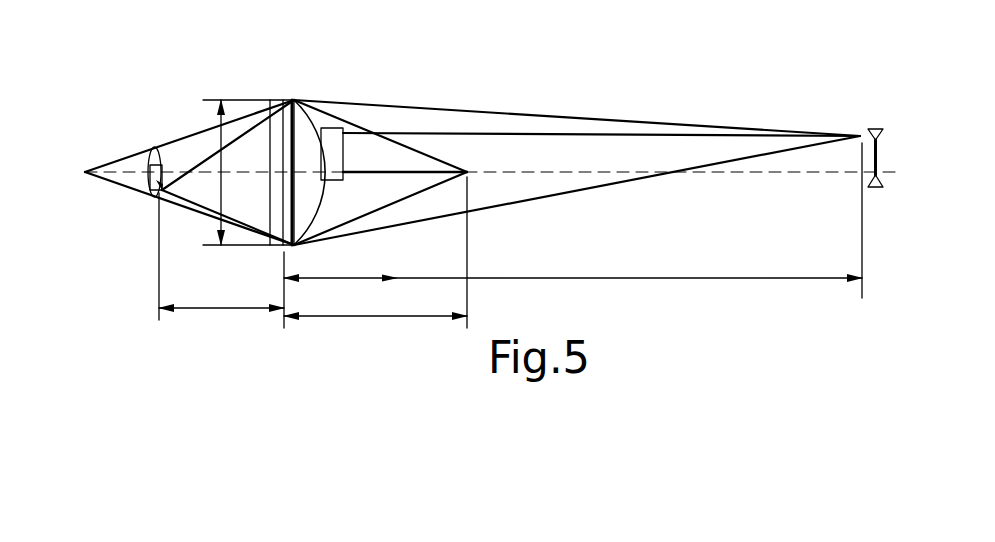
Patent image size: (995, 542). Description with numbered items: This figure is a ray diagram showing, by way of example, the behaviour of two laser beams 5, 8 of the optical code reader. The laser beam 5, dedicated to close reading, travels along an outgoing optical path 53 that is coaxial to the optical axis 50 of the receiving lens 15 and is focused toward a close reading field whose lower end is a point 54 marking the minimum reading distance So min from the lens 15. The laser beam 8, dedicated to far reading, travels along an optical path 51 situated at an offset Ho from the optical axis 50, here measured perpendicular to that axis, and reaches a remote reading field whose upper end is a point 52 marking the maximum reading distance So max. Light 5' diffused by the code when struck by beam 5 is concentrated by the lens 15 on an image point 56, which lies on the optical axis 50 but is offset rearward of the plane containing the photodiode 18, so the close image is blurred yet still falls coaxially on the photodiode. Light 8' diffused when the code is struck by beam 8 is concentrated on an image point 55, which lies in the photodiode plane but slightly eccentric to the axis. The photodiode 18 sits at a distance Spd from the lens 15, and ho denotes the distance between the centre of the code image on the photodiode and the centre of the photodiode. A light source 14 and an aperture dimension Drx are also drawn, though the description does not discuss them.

The laser beam 5 is at (365, 220).
The diffused light 5' is at (308, 162).
The laser beam 8 is at (601, 105).
The diffused light 8' is at (415, 120).
The light source 14 is at (334, 128).
The receiving lens 15 is at (270, 100).
The photodiode 18 is at (151, 192).
The optical axis 50 is at (808, 176).
The optical path 51 is at (665, 134).
The point 52 is at (860, 136).
The outgoing optical path 53 is at (390, 175).
The point 54 is at (469, 174).
The image point 55 is at (158, 194).
The image point 56 is at (86, 174).
The distance ho is at (147, 169).
The offset Ho is at (886, 204).
The receiver aperture diameter Drx is at (176, 156).
The distance of the photodiode from the receiving lens Spd is at (221, 293).
The minimum reading distance So min is at (375, 301).
The maximum reading distance So max is at (573, 265).